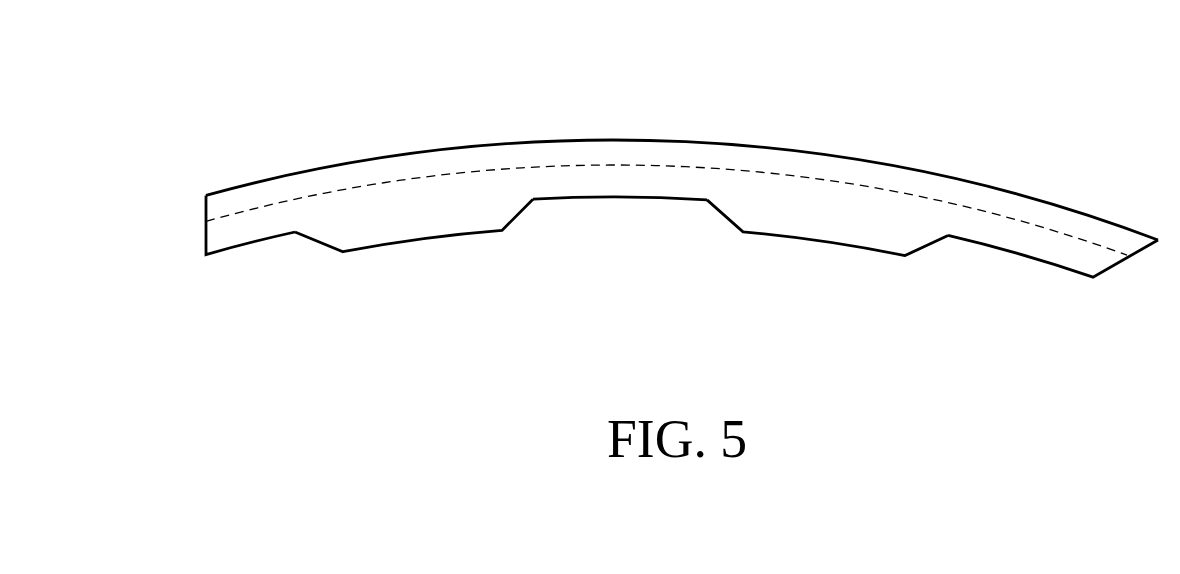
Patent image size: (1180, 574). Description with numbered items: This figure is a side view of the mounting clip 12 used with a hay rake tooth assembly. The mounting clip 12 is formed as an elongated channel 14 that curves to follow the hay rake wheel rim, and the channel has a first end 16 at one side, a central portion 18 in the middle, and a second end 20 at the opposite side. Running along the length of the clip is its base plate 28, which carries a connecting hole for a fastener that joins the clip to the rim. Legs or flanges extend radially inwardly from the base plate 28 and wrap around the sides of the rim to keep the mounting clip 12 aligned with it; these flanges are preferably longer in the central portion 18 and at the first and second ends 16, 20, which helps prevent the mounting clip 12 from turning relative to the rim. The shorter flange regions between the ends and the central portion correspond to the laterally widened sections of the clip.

The mounting clip 12 is at (637, 76).
The elongated channel 14 is at (517, 167).
The first end 16 is at (205, 235).
The central portion 18 is at (612, 198).
The second end 20 is at (1120, 265).
The base plate 28 is at (698, 167).